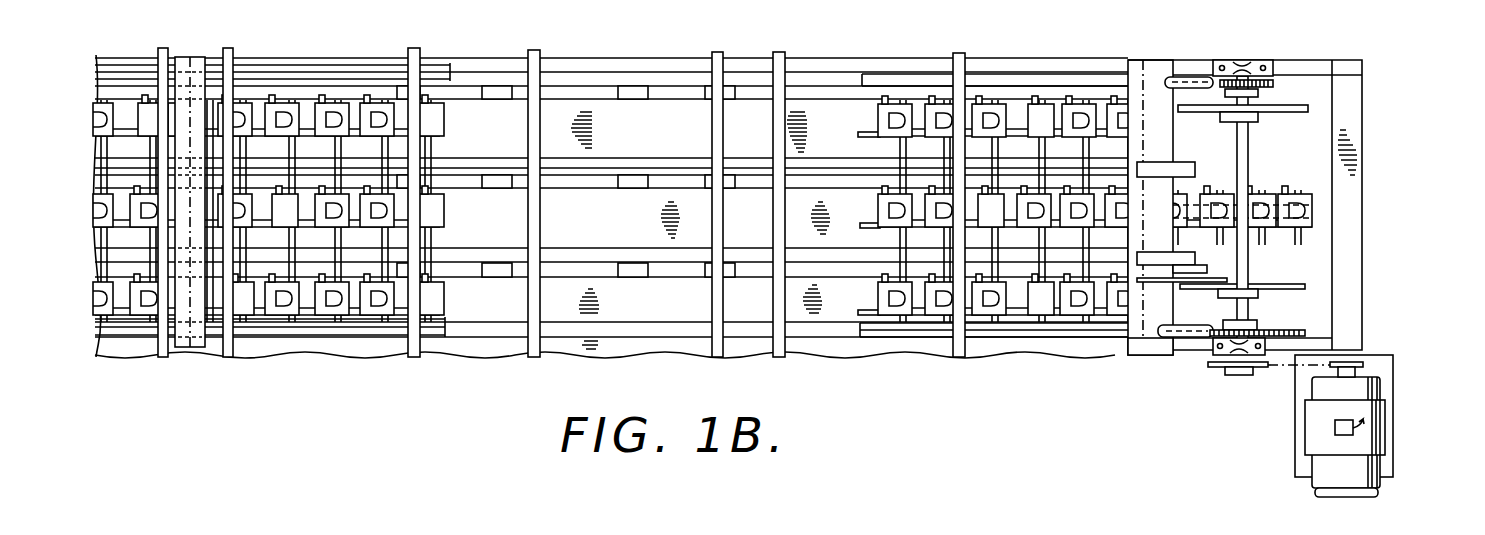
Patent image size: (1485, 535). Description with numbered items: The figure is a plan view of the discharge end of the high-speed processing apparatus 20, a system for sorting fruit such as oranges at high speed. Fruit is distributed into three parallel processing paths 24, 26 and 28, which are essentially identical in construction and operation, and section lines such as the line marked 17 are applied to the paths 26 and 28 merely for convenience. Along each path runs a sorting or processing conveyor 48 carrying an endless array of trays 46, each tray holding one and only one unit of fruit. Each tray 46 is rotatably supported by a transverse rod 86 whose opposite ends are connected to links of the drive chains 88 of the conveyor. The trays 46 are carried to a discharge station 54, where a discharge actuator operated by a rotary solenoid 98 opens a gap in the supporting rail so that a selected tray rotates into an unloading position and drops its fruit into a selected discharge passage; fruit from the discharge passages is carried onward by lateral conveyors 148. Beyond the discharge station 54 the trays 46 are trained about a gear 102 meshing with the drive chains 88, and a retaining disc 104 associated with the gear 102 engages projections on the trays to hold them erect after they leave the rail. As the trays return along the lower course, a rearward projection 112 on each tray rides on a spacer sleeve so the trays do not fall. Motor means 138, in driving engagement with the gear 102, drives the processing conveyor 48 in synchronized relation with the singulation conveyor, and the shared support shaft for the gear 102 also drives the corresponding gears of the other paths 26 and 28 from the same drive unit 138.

The section line 17- 17 is at (1157, 236).
The high-speed processing apparatus 20 is at (1368, 55).
The processing path 24 is at (446, 298).
The processing path 26 is at (1336, 212).
The processing path 28 is at (1320, 106).
The tray 46 is at (438, 122).
The processing conveyor 48 is at (386, 342).
The discharge station 54 is at (357, 57).
The transverse rod 86 is at (289, 94).
The drive chain 88 is at (1042, 68).
The rotary solenoid 98 is at (623, 266).
The gear 102 is at (1308, 333).
The retaining disc 104 is at (1273, 298).
The rearward projection 112 is at (862, 134).
The motor means 138 is at (1392, 418).
The lateral conveyor 148 is at (830, 66).